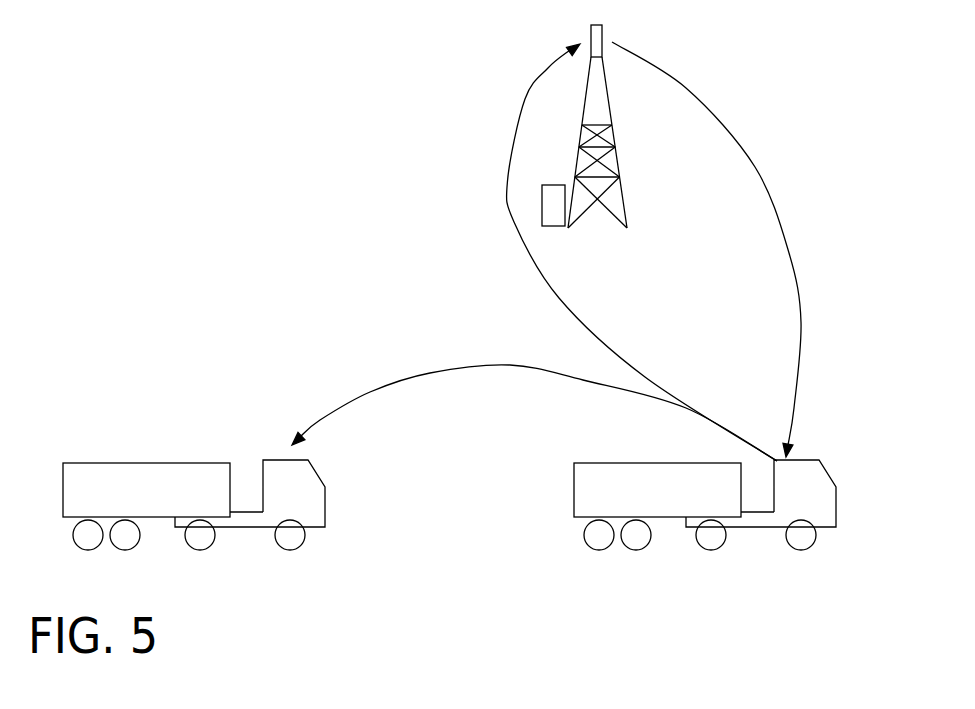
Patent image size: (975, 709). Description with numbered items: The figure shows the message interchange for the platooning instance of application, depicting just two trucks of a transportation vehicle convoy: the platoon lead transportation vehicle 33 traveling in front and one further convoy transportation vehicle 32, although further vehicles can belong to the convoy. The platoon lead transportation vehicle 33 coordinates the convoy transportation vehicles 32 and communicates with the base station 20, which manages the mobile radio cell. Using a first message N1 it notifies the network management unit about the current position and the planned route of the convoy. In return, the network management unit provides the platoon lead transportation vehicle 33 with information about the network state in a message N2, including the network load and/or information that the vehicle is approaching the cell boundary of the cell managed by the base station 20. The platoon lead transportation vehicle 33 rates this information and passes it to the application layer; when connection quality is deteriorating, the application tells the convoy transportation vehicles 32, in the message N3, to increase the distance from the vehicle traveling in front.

The base station 20 is at (618, 175).
The convoy transportation vehicle 32 is at (140, 475).
The platoon lead transportation vehicle 33 is at (820, 492).
The first message N1 is at (616, 252).
The message with network state information N2 is at (725, 249).
The message to convoy vehicles N3 is at (534, 395).